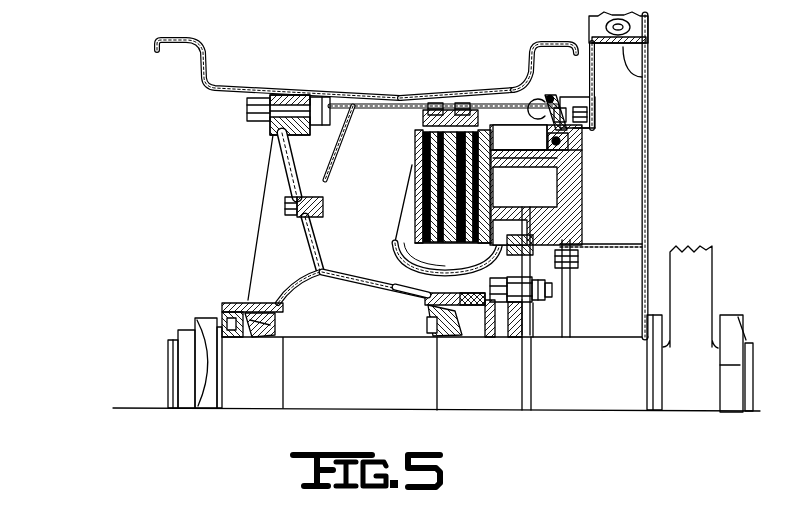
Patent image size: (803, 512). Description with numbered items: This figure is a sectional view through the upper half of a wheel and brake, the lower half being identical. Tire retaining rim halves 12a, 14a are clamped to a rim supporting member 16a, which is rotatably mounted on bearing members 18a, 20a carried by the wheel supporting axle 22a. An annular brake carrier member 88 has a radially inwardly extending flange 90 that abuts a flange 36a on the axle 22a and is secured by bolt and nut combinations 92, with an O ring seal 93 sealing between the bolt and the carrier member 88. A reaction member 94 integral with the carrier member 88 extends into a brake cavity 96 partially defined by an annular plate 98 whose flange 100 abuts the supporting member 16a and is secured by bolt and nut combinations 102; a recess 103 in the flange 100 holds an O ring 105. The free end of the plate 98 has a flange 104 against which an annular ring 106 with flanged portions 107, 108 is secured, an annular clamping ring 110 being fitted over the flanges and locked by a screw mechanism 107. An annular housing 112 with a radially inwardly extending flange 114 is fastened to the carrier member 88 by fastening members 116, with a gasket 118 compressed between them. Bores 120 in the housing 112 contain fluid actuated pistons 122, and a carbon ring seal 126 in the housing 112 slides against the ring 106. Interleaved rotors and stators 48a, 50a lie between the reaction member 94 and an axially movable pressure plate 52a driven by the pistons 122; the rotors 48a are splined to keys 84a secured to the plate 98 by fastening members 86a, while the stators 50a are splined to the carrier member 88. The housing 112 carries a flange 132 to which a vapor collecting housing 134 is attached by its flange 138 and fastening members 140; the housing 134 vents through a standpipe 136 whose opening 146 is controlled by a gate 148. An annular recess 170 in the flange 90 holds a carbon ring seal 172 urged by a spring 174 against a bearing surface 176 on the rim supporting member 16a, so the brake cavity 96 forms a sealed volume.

The tire retaining rim half 12a is at (516, 87).
The tire retaining rim half 14a is at (230, 85).
The rim supporting member 16a is at (272, 180).
The bearing member 18a is at (425, 317).
The bearing member 20a is at (278, 325).
The wheel supporting axle 22a is at (262, 403).
The flange 36a is at (527, 370).
The rotors 48a is at (415, 136).
The stators 50a is at (417, 167).
The pressure plate 52a is at (484, 130).
The keys 84a is at (423, 118).
The fastening members 86a is at (437, 104).
The brake carrier member 88 is at (408, 241).
The radially inwardly extending flange 90 is at (520, 320).
The bolt and nut combinations 92 is at (540, 303).
The O ring seal 93 is at (510, 276).
The reaction member 94 is at (413, 212).
The brake cavity 96 is at (383, 195).
The annular plate 98 is at (373, 96).
The flange 100 is at (292, 155).
The bolt and nut combinations 102 is at (287, 208).
The recess 103 is at (326, 177).
The flange 104 is at (549, 97).
The O ring 105 is at (327, 200).
The annular ring 106 is at (545, 123).
The flanged portion / screw mechanism 107 is at (556, 107).
The flanged portion 108 is at (545, 103).
The annular clamping ring 110 is at (553, 98).
The annular housing 112 is at (570, 228).
The radially inwardly extending flange 114 is at (571, 265).
The fastening members 116 is at (532, 260).
The annular gasket or seal 118 is at (520, 240).
The bores 120 is at (573, 209).
The fluid actuated pistons 122 is at (573, 196).
The annular carbon ring seal 126 is at (570, 143).
The circumferentially extending flange 132 is at (576, 102).
The vapor collecting semi-circular housing 134 is at (648, 72).
The standpipe 136 is at (648, 173).
The flange 138 is at (580, 108).
The fastening members 140 is at (578, 257).
The opening 146 is at (640, 77).
The gate 148 is at (640, 33).
The annular recess 170 is at (477, 335).
The annular carbon ring seal 172 is at (430, 269).
The spring 174 is at (500, 337).
The bearing surface 176 is at (458, 277).